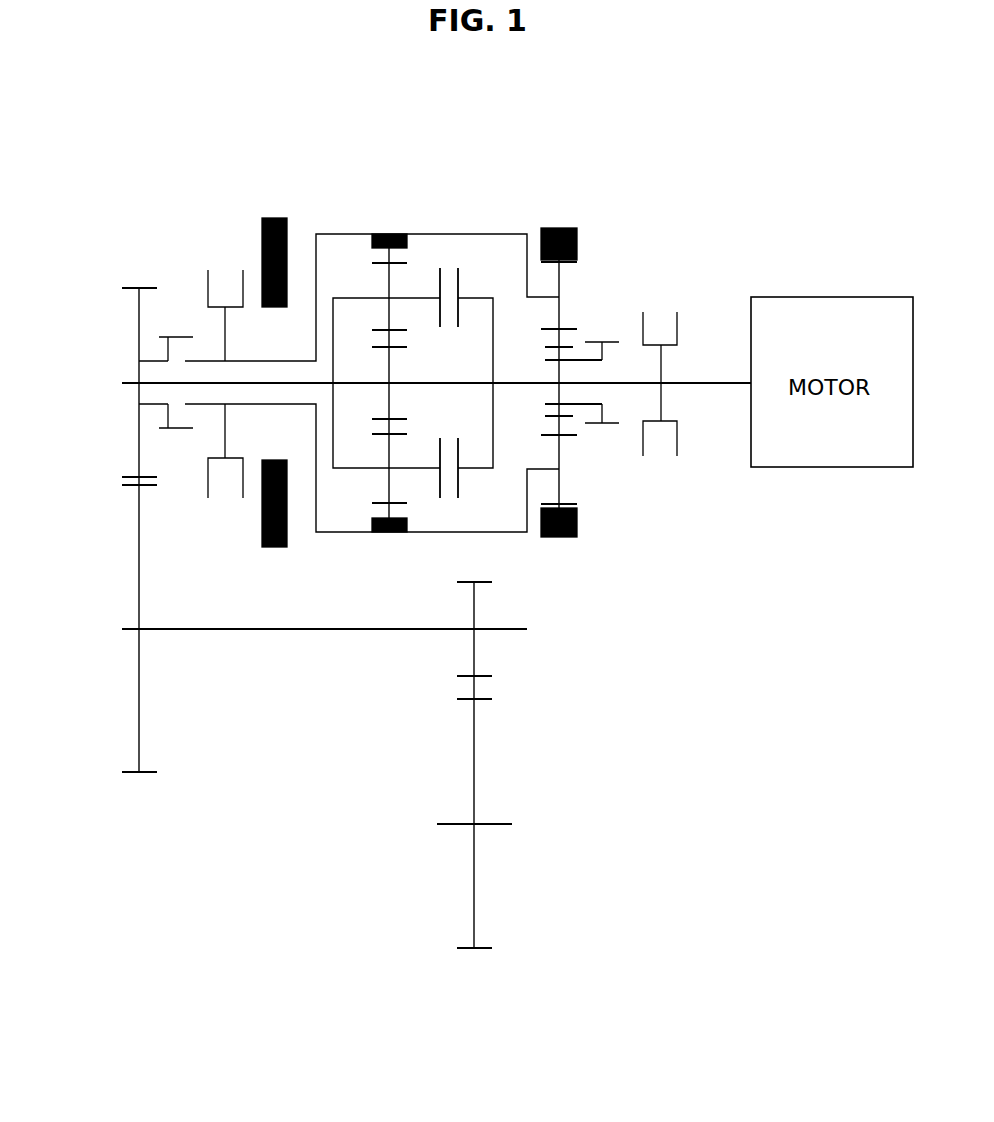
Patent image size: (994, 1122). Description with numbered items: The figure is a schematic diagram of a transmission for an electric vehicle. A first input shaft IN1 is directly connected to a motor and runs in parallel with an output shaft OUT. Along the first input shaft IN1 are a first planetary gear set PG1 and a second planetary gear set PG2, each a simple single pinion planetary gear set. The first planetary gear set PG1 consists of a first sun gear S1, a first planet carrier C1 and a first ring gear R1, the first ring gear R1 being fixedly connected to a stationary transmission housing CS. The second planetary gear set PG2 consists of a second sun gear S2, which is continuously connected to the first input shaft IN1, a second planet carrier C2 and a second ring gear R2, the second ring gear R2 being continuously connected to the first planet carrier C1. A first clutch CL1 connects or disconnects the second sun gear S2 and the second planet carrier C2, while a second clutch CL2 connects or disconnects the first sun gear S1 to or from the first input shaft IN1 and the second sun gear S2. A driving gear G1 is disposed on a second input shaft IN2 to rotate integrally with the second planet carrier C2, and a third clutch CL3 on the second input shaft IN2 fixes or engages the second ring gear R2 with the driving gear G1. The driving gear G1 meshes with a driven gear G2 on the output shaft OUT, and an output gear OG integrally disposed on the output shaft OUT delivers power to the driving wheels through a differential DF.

The driving gear G1 is at (133, 288).
The driven gear G2 is at (132, 777).
The first input shaft IN1 is at (693, 383).
The second input shaft IN2 is at (157, 383).
The first clutch CL1 is at (476, 381).
The second clutch CL2 is at (656, 369).
The third clutch CL3 is at (225, 370).
The transmission housing CS is at (273, 218).
The first planetary gear set PG1 is at (603, 329).
The second planetary gear set PG2 is at (372, 344).
The first sun gear S1 is at (590, 382).
The second sun gear S2 is at (400, 382).
The first planet carrier C1 is at (578, 384).
The second planet carrier C2 is at (410, 383).
The first ring gear R1 is at (577, 508).
The second ring gear R2 is at (389, 398).
The output shaft OUT is at (517, 629).
The output gear OG is at (483, 677).
The differential DF is at (496, 837).